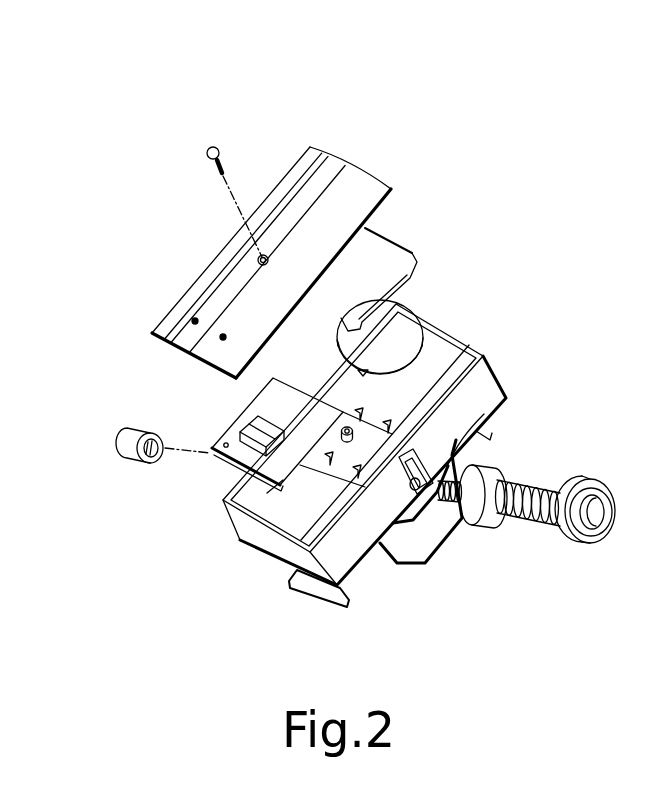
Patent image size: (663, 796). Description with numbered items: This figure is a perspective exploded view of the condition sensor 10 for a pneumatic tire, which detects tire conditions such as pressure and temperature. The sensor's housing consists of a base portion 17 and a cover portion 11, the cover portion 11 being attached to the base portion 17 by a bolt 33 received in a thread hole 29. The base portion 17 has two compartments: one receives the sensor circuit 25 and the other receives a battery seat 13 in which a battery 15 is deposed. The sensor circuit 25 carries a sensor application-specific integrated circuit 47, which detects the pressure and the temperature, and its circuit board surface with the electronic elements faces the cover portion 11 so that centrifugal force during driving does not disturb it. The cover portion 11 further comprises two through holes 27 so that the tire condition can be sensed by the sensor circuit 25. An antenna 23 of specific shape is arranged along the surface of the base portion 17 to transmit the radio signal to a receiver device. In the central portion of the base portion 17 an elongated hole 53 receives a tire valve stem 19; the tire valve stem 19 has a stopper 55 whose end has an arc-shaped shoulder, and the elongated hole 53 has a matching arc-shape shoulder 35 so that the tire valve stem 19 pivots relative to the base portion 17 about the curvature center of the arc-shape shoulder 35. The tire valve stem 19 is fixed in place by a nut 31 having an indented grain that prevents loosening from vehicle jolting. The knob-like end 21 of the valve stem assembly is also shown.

The condition sensor 10 is at (188, 91).
The cover portion 11 is at (352, 190).
The battery seat 13 is at (378, 248).
The battery 15 is at (402, 316).
The base portion 17 is at (480, 389).
The tire valve stem 19 is at (550, 482).
The knob 21 is at (613, 473).
The antenna 23 is at (320, 590).
The sensor circuit 25 is at (233, 431).
The through holes 27 is at (223, 337).
The thread hole 29 is at (260, 261).
The nut 31 is at (120, 443).
The bolt 33 is at (220, 147).
The arc-shape shoulder 35 is at (503, 397).
The sensor application-specific integrated circuit 47 is at (240, 455).
The elongated hole 53 is at (382, 486).
The stopper 55 is at (496, 528).